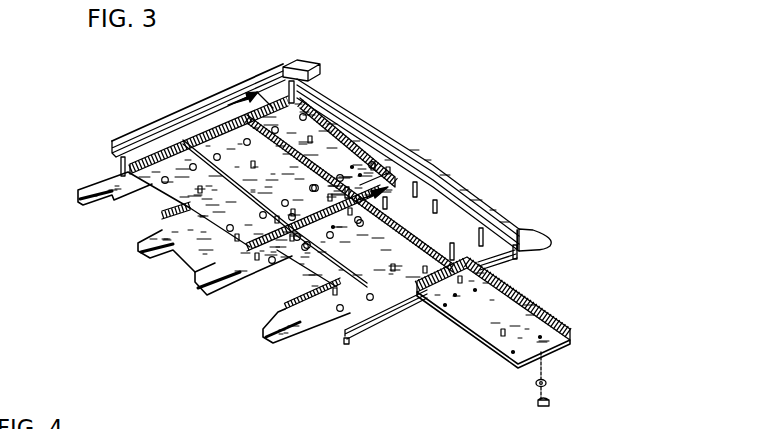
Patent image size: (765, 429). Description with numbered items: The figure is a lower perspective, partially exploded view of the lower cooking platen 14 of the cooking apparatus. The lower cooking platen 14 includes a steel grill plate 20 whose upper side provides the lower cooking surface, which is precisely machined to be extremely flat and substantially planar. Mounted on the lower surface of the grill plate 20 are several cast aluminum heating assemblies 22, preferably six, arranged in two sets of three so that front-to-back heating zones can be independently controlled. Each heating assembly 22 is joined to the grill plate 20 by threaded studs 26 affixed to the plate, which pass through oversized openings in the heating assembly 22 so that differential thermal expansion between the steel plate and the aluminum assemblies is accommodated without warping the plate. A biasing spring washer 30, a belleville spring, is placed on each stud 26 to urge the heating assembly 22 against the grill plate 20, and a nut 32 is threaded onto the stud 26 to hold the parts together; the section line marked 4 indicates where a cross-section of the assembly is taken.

The lower cooking platen 14 is at (151, 126).
The section line 4- 4 is at (315, 137).
The grill plate 20 is at (451, 205).
The heating assembly 22 is at (288, 185).
The threaded stud 26 is at (450, 248).
The biasing spring washer 30 is at (546, 383).
The nut 32 is at (550, 404).